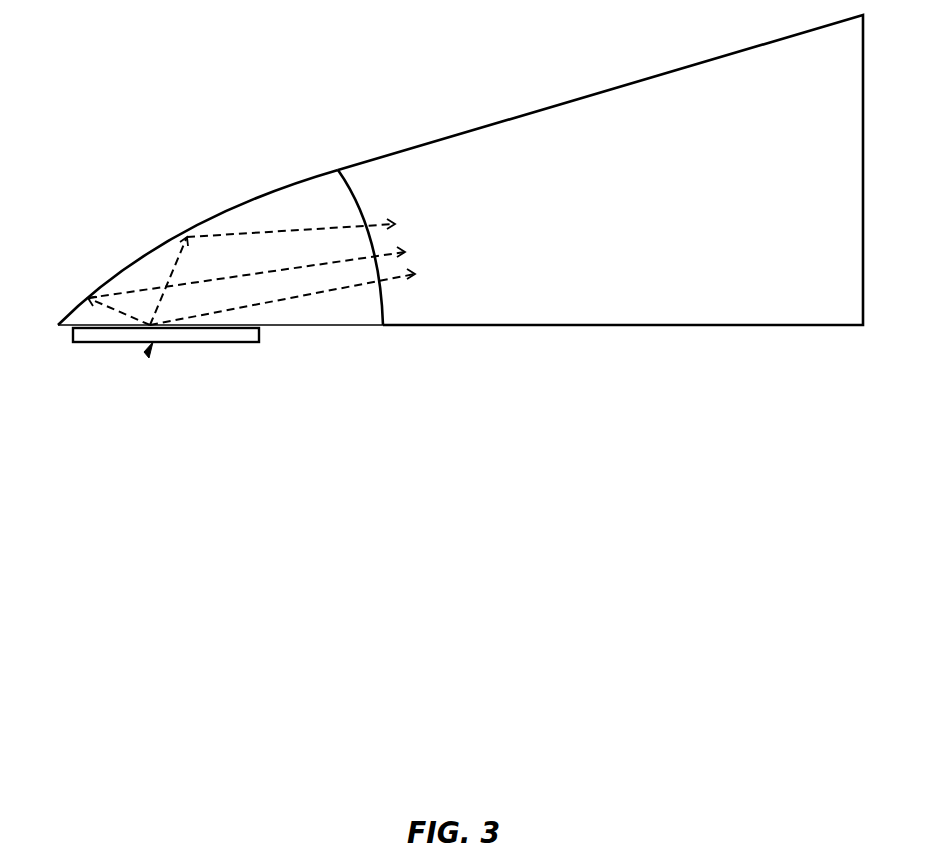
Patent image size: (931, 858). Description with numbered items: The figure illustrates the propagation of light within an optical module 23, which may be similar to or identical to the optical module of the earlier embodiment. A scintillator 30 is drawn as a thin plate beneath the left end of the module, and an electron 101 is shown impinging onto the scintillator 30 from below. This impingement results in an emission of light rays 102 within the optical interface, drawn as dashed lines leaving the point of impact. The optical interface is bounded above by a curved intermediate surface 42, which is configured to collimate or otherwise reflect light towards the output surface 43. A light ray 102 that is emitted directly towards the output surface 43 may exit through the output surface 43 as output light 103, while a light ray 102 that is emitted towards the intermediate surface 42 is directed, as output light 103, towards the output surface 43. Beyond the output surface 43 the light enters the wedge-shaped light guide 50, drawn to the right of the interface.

The light guide 50 is at (617, 221).
The intermediate surface 42 is at (192, 222).
The output surface 43 is at (367, 198).
The scintillator 30 is at (73, 340).
The light rays 102 is at (167, 263).
The output light 103 is at (330, 225).
The electron 101 is at (149, 358).
The optical module 23 is at (223, 716).